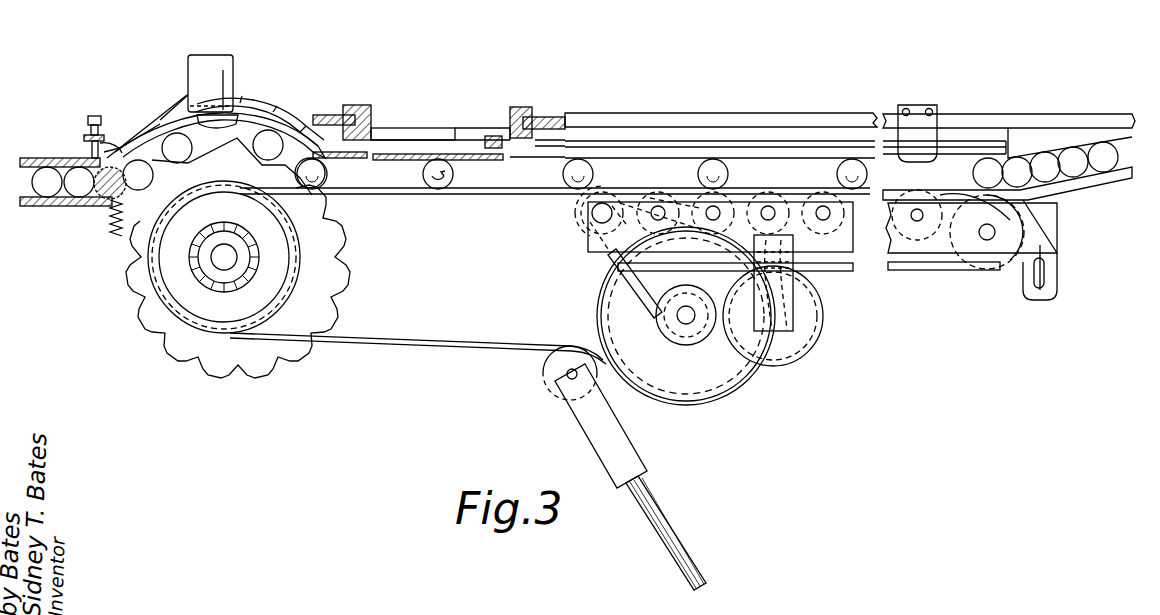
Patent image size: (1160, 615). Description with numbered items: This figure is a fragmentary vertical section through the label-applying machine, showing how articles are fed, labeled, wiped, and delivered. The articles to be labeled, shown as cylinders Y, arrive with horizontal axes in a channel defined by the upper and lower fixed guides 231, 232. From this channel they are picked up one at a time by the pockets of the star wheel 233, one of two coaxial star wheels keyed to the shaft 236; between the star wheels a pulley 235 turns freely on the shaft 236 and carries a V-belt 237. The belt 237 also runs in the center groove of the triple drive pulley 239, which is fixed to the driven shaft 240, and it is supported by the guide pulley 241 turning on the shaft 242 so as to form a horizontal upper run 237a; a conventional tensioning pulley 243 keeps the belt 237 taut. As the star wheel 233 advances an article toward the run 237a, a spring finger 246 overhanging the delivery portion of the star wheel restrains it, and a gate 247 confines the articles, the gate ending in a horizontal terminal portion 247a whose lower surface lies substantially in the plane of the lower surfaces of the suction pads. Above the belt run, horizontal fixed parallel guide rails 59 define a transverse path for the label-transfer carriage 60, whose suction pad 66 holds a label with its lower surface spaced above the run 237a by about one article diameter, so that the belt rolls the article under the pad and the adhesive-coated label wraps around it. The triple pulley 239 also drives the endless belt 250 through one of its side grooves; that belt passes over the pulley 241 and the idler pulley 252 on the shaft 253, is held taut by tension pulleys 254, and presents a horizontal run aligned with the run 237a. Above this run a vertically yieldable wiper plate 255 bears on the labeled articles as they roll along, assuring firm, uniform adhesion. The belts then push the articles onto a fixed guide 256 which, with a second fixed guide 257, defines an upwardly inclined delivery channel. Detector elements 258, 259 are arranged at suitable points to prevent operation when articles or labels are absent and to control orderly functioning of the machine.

The upper fixed guide 231 is at (60, 157).
The lower fixed guide 232 is at (75, 206).
The cylinders Y is at (45, 178).
The gate 247 is at (177, 112).
The horizontal terminal portion 247a is at (385, 134).
The spring finger 246 is at (292, 142).
The detector element 258 is at (227, 125).
The guide rails 59 is at (330, 114).
The label-transfer carriage 60 is at (520, 106).
The pad 66 is at (462, 154).
The wiper plate 255 is at (800, 150).
The detector element 259 is at (928, 135).
The second fixed guide 257 is at (1060, 110).
The fixed guide 256 is at (1082, 187).
The star wheel 233 is at (268, 348).
The pulley 235 is at (275, 267).
The shaft 236 is at (224, 244).
The V-belt 237 is at (392, 340).
The upper run 237a is at (396, 196).
The triple drive pulley 239 is at (584, 306).
The shaft 240 is at (688, 309).
The guide pulley 241 is at (578, 222).
The shaft 242 is at (604, 210).
The tensioning pulley 243 is at (545, 375).
The tension pulleys 254 is at (815, 306).
The endless belt 250 is at (905, 268).
The idler pulley 252 is at (960, 200).
The shaft 253 is at (987, 240).